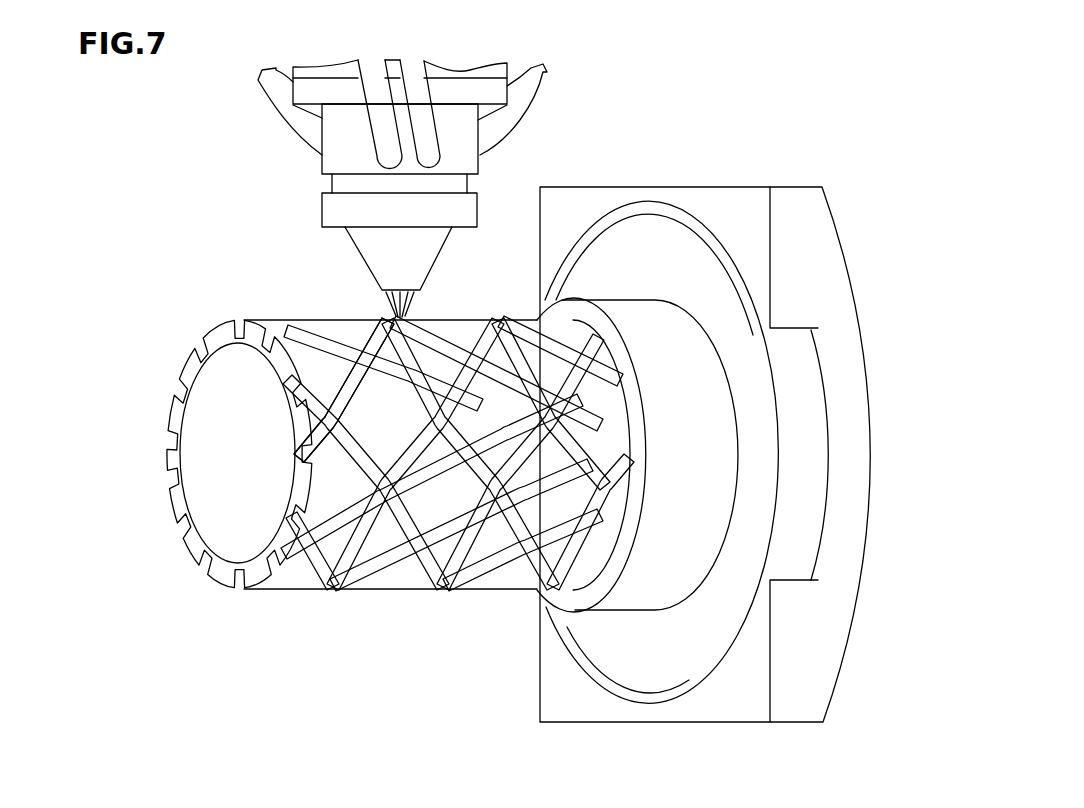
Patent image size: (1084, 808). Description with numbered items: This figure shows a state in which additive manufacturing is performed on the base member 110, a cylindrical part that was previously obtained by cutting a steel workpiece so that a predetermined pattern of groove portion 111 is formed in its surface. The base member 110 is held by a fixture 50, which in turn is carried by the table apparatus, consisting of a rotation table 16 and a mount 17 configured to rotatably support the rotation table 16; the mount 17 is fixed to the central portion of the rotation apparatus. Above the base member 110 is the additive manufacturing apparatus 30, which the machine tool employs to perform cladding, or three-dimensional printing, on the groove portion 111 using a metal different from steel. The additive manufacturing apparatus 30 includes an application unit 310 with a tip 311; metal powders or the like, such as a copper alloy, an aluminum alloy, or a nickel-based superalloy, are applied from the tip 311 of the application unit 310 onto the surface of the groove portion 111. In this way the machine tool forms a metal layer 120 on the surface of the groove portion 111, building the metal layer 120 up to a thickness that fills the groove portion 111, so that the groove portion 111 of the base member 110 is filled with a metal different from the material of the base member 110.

The additive manufacturing apparatus 30 is at (355, 189).
The application unit 310 is at (343, 162).
The tip 311 is at (415, 265).
The metal layer 120 is at (355, 387).
The groove portion 111 is at (496, 565).
The base member 110 is at (406, 474).
The fixture 50 is at (700, 406).
The rotation table 16 is at (762, 475).
The mount 17 is at (556, 689).